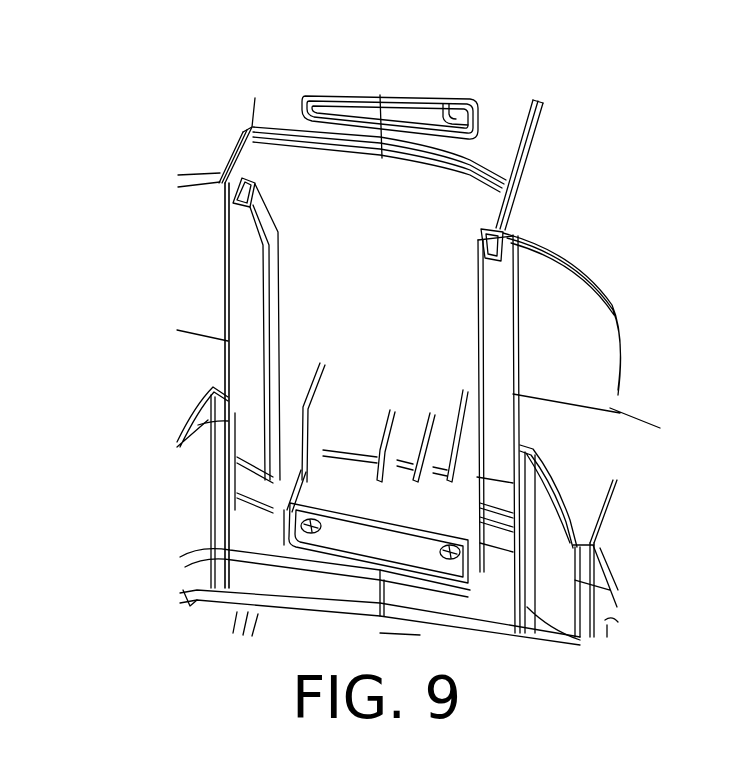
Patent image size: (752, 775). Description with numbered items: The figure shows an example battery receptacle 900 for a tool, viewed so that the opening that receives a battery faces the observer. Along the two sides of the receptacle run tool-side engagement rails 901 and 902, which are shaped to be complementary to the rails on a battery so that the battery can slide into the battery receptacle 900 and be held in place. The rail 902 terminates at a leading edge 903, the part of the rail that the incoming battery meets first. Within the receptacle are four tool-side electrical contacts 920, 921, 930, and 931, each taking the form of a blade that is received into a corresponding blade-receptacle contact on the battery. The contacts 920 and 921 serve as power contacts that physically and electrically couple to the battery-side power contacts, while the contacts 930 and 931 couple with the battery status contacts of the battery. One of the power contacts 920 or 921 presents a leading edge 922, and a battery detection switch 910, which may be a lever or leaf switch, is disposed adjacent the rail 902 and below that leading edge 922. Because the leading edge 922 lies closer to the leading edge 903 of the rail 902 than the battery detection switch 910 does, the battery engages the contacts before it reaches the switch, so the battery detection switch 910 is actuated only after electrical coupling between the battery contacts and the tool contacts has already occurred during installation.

The battery receptacle 900 is at (460, 200).
The tool-side engagement rail 901 is at (488, 281).
The tool-side engagement rail 902 is at (270, 264).
The leading edge of tool-side engagement rail 903 is at (243, 189).
The battery detection switch 910 is at (298, 457).
The tool-side electrical contact 920 is at (300, 430).
The tool-side electrical contact 921 is at (455, 510).
The leading edge of power contact 922 is at (310, 370).
The tool-side electrical contact 930 is at (408, 480).
The tool-side electrical contact 931 is at (378, 455).